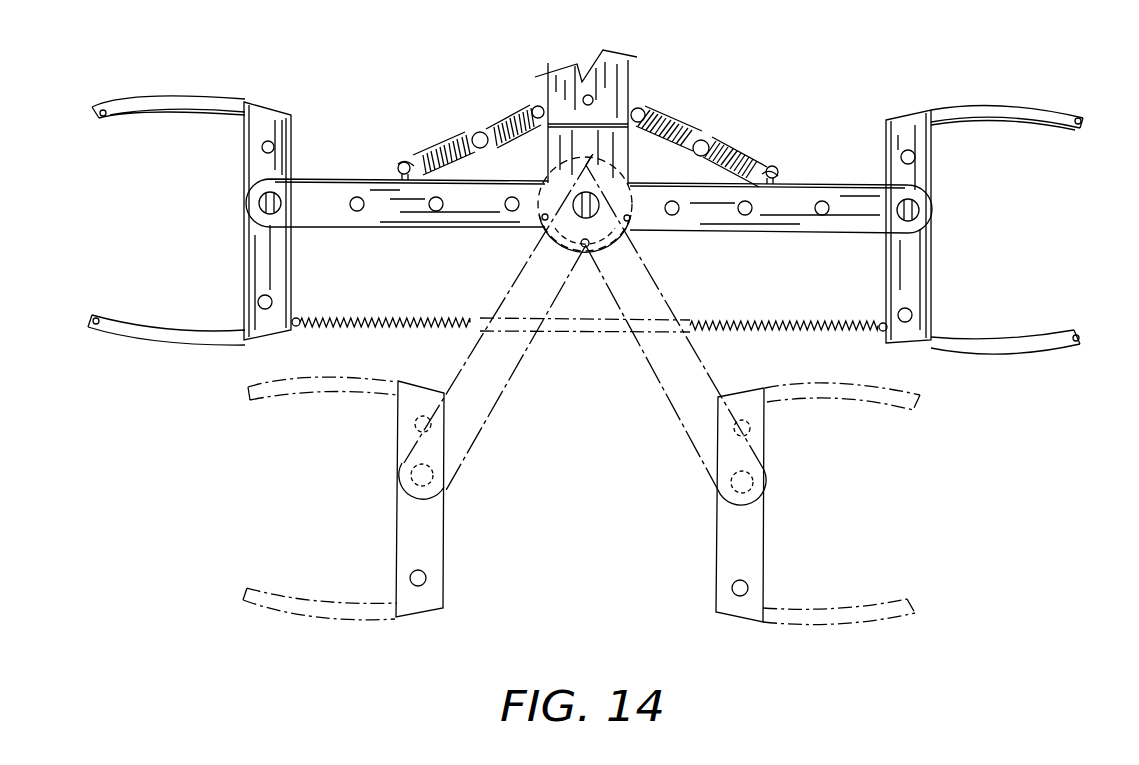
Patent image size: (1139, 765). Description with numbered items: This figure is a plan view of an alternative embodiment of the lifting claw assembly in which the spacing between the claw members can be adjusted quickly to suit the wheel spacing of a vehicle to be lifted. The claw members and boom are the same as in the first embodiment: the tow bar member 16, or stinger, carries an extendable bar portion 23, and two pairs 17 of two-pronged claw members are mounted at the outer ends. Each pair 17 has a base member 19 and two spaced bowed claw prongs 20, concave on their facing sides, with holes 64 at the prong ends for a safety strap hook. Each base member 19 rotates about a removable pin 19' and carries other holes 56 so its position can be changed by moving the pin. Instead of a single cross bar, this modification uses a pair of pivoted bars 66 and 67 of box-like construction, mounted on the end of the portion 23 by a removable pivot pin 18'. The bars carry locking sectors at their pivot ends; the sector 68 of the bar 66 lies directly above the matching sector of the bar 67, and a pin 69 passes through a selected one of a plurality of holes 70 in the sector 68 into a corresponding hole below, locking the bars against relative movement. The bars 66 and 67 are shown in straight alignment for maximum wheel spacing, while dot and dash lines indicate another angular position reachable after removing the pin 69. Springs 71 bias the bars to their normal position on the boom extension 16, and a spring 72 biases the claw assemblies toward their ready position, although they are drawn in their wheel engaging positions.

The tow bar member 16 is at (583, 50).
The extendable bar portion 23 is at (630, 80).
The springs 71 is at (486, 134).
The holes 70 is at (541, 226).
The holes 56 is at (276, 150).
The removable pin 19' is at (584, 209).
The base member 19 is at (588, 362).
The pairs of claw members 17 is at (151, 234).
The holes 64 is at (104, 118).
The claw prongs 20 is at (186, 85).
The pivoted bar 66 is at (398, 229).
The pivoted bar 67 is at (766, 235).
The removable pivot pin 18' is at (626, 224).
The sector 68 is at (573, 244).
The pin 69 is at (585, 250).
The spring 72 is at (737, 318).